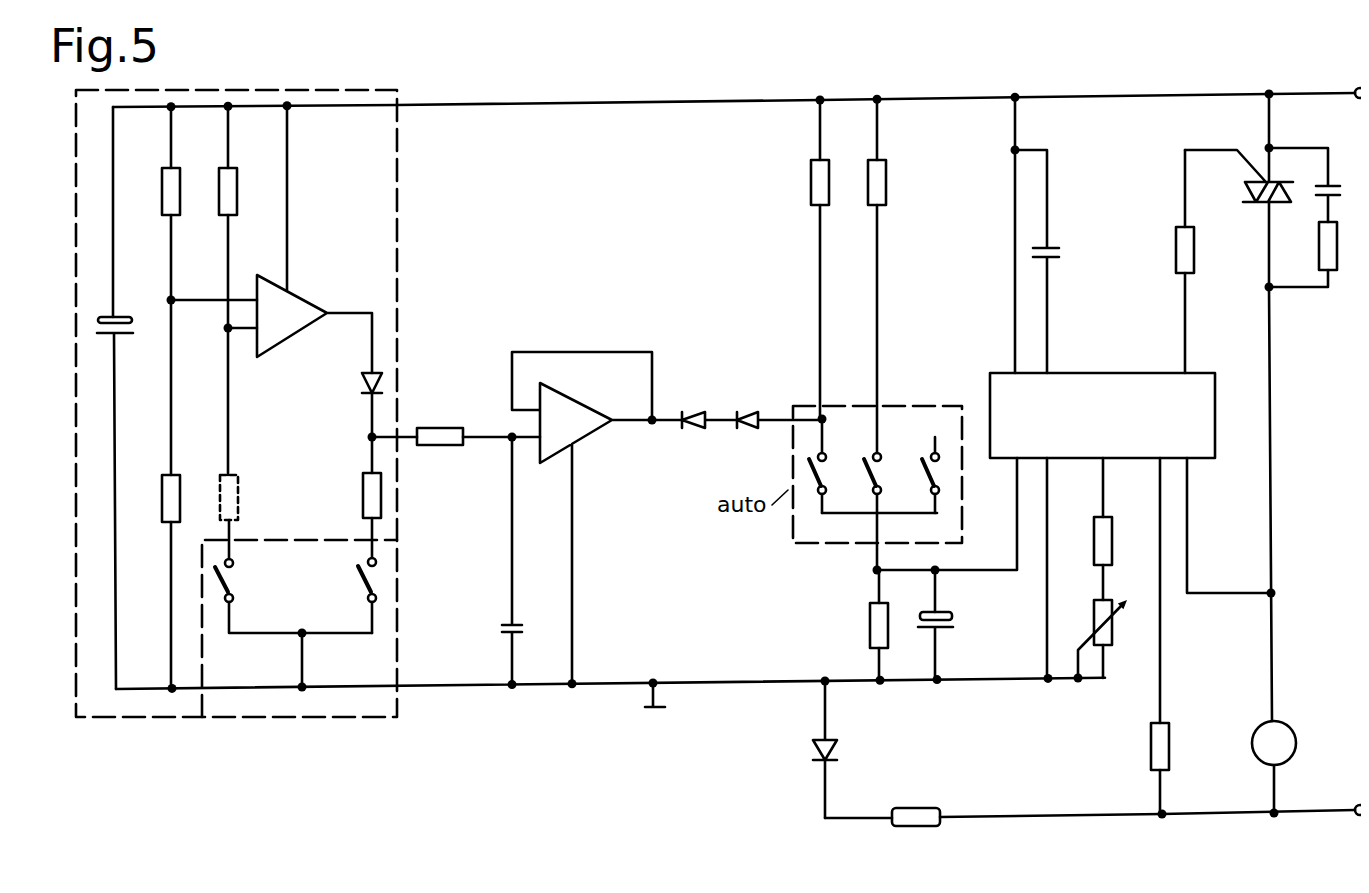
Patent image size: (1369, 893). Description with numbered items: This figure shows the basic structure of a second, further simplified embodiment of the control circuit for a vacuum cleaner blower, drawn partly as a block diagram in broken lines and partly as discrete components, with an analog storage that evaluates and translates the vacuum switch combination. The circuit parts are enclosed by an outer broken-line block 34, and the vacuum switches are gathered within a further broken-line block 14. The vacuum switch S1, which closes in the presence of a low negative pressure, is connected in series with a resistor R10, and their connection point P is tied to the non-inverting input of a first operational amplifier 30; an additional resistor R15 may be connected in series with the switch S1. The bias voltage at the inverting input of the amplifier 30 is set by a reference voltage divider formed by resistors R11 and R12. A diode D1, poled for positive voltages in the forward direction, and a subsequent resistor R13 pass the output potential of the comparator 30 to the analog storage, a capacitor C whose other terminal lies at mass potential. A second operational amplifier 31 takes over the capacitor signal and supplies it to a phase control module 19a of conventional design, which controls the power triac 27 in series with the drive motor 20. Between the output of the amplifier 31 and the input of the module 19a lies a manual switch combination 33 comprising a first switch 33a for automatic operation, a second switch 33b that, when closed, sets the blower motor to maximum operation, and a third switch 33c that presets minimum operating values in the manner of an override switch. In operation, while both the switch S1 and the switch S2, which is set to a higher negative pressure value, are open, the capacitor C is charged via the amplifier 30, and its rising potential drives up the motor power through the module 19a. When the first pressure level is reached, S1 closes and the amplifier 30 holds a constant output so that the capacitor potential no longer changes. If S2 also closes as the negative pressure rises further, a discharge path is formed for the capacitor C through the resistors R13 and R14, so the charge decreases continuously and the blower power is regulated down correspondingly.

The control circuit (dashed block) 34 is at (93, 718).
The switch unit 14 is at (230, 675).
The reference voltage divider resistor R11 is at (162, 186).
The resistor R10 is at (218, 186).
The reference voltage divider resistor R12 is at (163, 500).
The additional resistor R15 is at (221, 490).
The resistor R14 is at (362, 500).
The resistor R13 is at (437, 447).
The connection point P is at (227, 330).
The operational amplifier 30 is at (283, 340).
The diode D1 is at (362, 380).
The operational amplifier 31 is at (583, 432).
The vacuum switch S1 is at (226, 580).
The vacuum switch S2 is at (363, 580).
The capacitor C is at (521, 561).
The manual switch combination 33 is at (852, 404).
The first switch 33a is at (833, 462).
The second switch 33b is at (886, 462).
The third switch 33c is at (940, 462).
The phase control module 19a is at (1194, 388).
The power triac 27 is at (1265, 205).
The drive motor 20 is at (1252, 742).